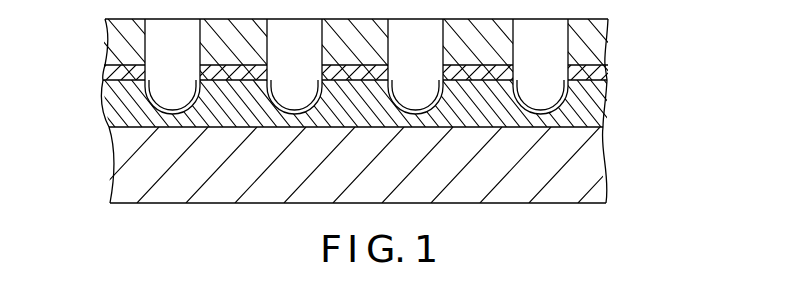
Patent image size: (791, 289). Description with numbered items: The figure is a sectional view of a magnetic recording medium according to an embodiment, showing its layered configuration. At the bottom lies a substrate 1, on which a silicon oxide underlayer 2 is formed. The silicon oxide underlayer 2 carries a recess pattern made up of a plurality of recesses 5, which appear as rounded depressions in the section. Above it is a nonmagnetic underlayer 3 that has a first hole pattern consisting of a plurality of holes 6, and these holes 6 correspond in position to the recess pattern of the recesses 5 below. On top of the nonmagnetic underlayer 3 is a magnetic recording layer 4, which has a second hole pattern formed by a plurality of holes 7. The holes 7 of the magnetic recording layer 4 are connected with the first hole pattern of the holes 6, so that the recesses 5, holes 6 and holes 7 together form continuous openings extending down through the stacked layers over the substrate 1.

The substrate 1 is at (590, 164).
The silicon oxide underlayer 2 is at (603, 101).
The nonmagnetic underlayer 3 is at (608, 71).
The magnetic recording layer 4 is at (589, 42).
The recesses 5 is at (102, 110).
The holes of first hole pattern 6 is at (103, 74).
The holes of second hole pattern 7 is at (101, 27).